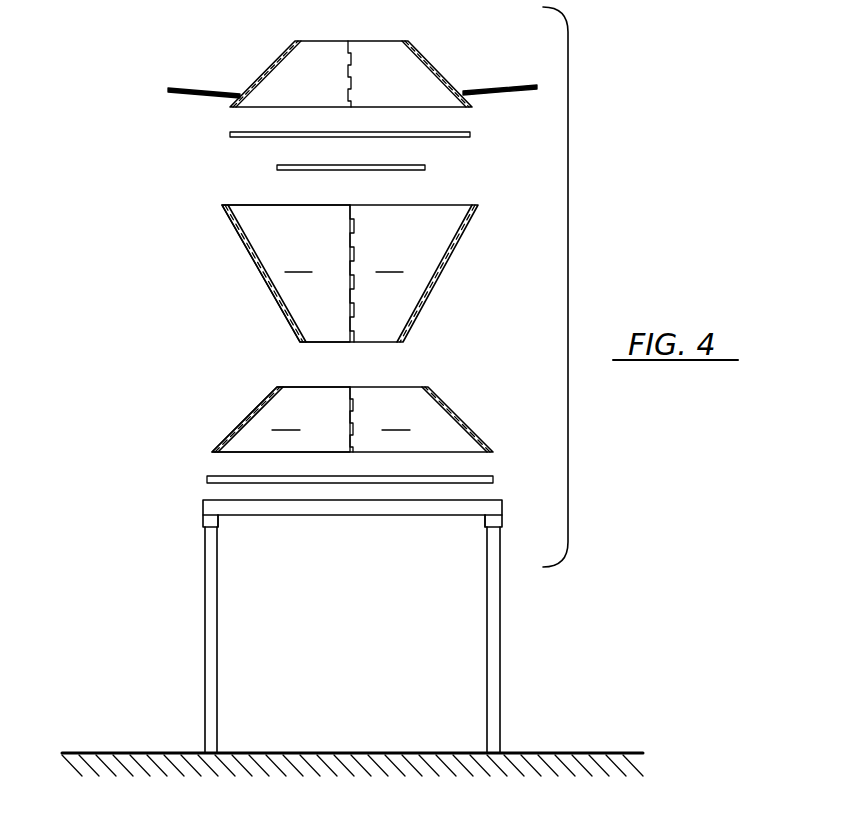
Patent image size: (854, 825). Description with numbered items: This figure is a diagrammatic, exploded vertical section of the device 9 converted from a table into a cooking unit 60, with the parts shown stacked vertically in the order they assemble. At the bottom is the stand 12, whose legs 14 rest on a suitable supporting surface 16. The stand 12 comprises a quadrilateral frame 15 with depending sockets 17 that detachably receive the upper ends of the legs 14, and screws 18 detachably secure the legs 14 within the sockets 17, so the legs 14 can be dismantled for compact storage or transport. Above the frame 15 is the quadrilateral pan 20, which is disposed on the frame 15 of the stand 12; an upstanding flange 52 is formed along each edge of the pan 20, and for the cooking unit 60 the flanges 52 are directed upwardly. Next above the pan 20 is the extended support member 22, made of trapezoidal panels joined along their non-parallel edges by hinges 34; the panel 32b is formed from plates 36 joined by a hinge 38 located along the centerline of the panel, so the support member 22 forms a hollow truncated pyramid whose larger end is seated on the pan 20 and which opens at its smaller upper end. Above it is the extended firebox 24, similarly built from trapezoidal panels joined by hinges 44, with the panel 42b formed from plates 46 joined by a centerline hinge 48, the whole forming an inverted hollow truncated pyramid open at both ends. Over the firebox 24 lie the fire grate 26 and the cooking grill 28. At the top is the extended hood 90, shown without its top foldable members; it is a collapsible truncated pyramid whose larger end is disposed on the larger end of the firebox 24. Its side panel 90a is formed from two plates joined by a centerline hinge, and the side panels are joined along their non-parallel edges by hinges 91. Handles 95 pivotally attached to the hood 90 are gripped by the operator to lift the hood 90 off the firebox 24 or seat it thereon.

The device 9 is at (590, 168).
The stand 12 is at (350, 626).
The legs 14 is at (217, 640).
The quadrilateral frame 15 is at (398, 515).
The supporting surface 16 is at (140, 752).
The sockets 17 is at (203, 520).
The screws 18 is at (218, 520).
The pan 20 is at (344, 465).
The support member 22 is at (358, 403).
The firebox 24 is at (362, 256).
The fire grate 26 is at (418, 165).
The cooking grill 28 is at (462, 131).
The panel 32b is at (322, 400).
The hinges 34 is at (226, 441).
The plates 36 is at (341, 419).
The hinge 38 is at (355, 393).
The panel 42b is at (286, 218).
The hinges 44 is at (258, 280).
The plates 46 is at (344, 261).
The hinge 48 is at (351, 215).
The upstanding flange 52 is at (478, 476).
The cooking unit 60 is at (281, 403).
The hood 90 is at (349, 53).
The side panel 90a is at (370, 58).
The hinges 91 is at (268, 62).
The handles 95 is at (509, 62).